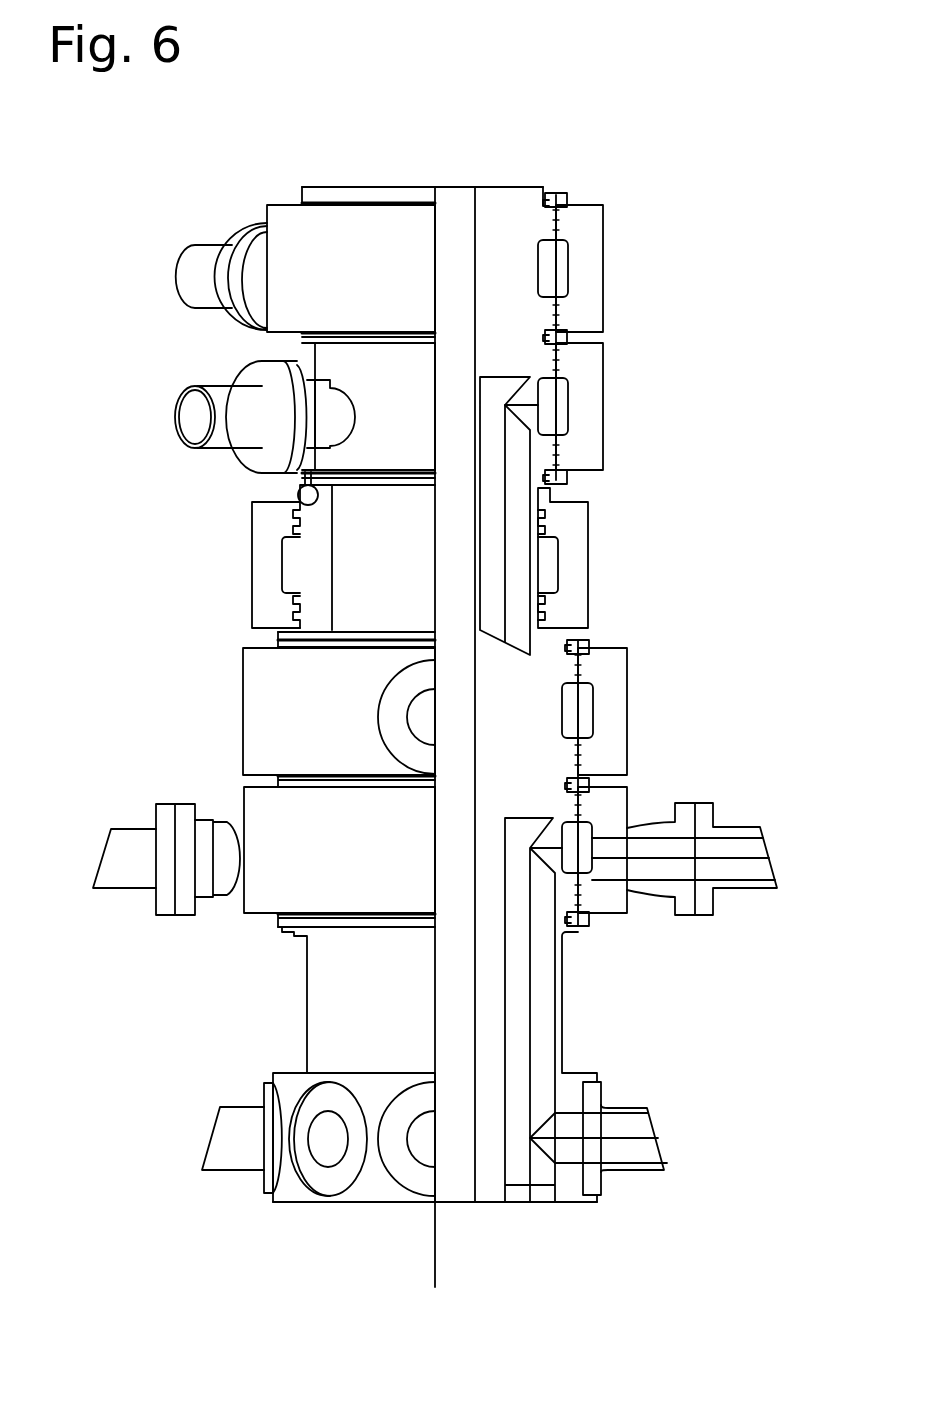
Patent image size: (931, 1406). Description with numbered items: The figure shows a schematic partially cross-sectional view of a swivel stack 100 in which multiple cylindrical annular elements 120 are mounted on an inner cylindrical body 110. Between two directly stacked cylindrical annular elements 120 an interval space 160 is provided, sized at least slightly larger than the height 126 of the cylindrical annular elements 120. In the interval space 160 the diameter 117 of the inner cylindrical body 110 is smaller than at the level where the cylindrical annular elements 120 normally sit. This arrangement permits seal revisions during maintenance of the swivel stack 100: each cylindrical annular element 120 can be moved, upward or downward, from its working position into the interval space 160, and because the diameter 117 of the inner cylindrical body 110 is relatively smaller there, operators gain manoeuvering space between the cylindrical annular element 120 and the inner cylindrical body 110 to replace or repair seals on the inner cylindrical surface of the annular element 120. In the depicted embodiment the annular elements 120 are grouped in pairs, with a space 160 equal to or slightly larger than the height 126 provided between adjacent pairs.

The swivel stack 100 is at (548, 155).
The inner cylindrical body 110 is at (352, 963).
The diameter of the inner cylindrical body 117 is at (529, 560).
The cylindrical annular element 120 is at (298, 230).
The height of the cylindrical annular elements 126 is at (308, 651).
The interval space 160 is at (237, 581).